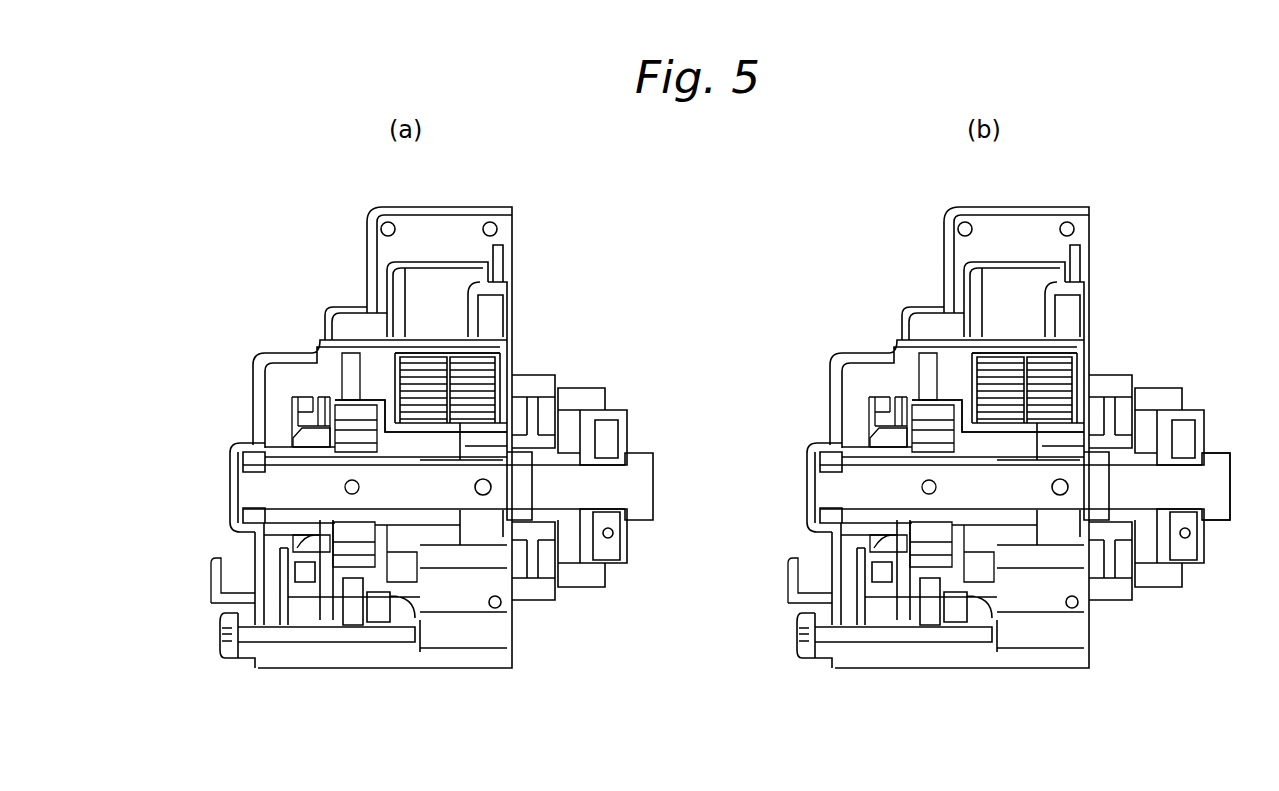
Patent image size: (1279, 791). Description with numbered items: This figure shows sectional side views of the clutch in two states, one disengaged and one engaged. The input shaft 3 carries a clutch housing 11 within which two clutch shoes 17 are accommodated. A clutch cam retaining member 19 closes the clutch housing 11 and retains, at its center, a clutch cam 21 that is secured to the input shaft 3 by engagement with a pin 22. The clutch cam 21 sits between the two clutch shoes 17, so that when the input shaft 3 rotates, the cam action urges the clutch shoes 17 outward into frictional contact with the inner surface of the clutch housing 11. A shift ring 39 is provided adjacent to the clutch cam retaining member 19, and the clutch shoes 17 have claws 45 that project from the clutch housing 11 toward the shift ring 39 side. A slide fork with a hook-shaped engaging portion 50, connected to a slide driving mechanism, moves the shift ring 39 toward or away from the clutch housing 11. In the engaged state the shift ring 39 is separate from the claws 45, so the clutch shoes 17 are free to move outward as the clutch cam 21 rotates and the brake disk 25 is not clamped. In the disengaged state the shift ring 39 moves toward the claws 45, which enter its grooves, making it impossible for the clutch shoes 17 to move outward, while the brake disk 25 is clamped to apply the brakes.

The input shaft 3 is at (1222, 439).
The clutch housing 11 is at (382, 400).
The clutch shoes 17 is at (342, 420).
The clutch cam retaining member 19 is at (284, 513).
The clutch cam 21 is at (357, 513).
The pin 22 is at (346, 483).
The brake disk 25 is at (352, 373).
The shift ring 39 is at (295, 420).
The claws 45 is at (320, 440).
The hook-shaped engaging portion 50 is at (215, 573).